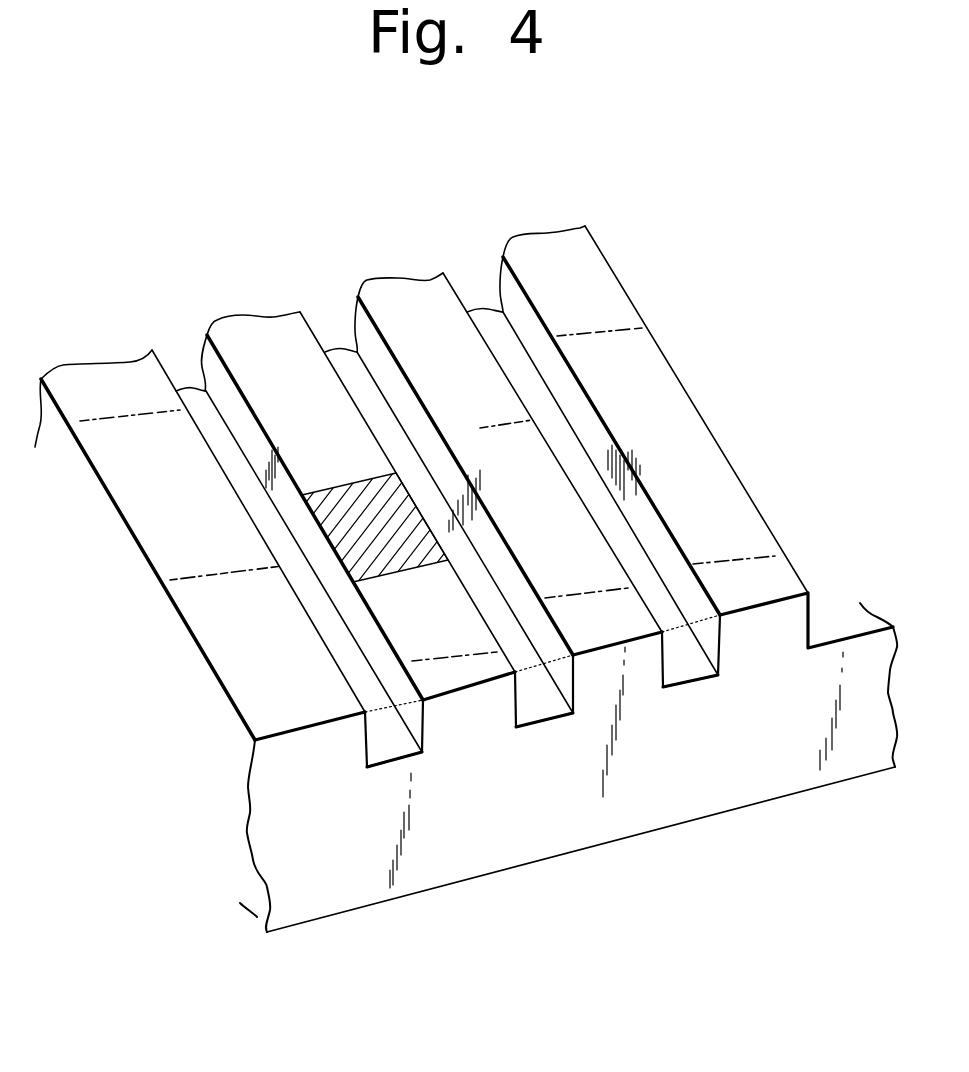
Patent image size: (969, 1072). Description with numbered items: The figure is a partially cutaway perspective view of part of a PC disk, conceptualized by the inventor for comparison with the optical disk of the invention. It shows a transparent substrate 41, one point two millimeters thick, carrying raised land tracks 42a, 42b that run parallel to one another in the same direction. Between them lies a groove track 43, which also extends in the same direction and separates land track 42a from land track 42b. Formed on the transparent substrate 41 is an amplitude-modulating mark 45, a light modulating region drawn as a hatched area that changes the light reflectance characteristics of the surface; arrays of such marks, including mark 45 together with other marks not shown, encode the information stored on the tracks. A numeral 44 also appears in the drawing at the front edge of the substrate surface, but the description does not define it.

The transparent substrate 41 is at (602, 825).
The land track 42a is at (262, 327).
The land track 42b is at (417, 290).
The groove track 43 is at (347, 357).
The top surface of substrate 44 is at (280, 740).
The amplitude-modulating mark 45 is at (360, 510).